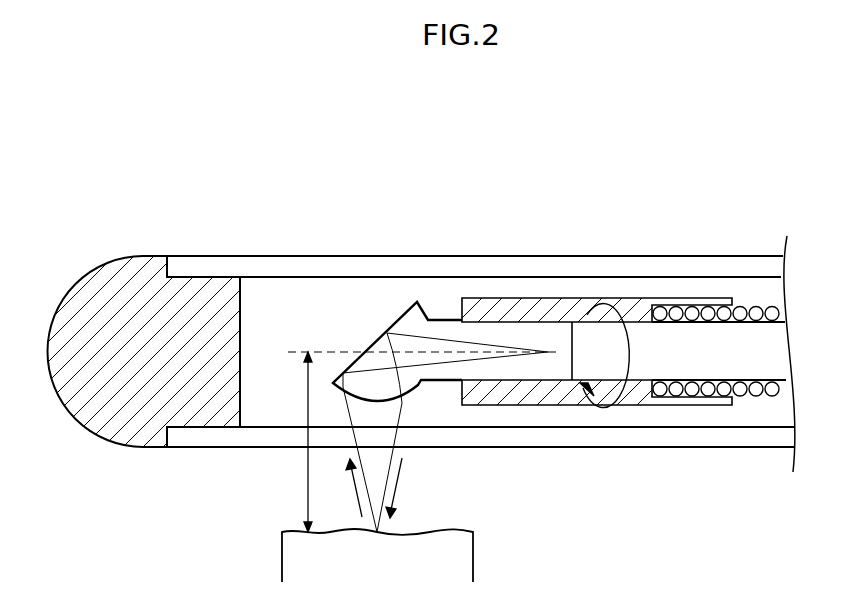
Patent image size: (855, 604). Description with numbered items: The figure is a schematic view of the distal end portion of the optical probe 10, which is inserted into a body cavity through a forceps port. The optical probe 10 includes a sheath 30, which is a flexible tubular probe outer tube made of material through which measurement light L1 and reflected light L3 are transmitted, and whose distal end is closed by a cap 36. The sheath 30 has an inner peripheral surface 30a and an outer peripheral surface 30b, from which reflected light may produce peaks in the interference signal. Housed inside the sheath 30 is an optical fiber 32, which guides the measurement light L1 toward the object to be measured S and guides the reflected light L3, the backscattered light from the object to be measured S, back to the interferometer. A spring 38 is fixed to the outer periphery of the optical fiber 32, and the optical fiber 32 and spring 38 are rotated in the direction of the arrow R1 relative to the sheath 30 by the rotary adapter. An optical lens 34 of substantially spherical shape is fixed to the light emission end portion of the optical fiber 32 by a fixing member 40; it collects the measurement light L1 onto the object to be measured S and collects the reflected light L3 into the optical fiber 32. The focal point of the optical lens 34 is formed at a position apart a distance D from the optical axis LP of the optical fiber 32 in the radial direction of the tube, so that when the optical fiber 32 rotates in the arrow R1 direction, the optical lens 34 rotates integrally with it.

The optical probe 10 is at (667, 204).
The sheath 30 is at (482, 266).
The inner peripheral surface 30a is at (313, 290).
The outer peripheral surface 30b is at (263, 256).
The optical fiber 32 is at (655, 367).
The optical lens 34 is at (428, 296).
The cap 36 is at (128, 258).
The spring 38 is at (757, 392).
The fixing member 40 is at (549, 301).
The arrow R1 is at (626, 356).
The optical axis LP is at (407, 352).
The distance D is at (298, 442).
The measurement light L1 is at (407, 488).
The reflected light L3 is at (343, 488).
The object to be measured S is at (463, 560).